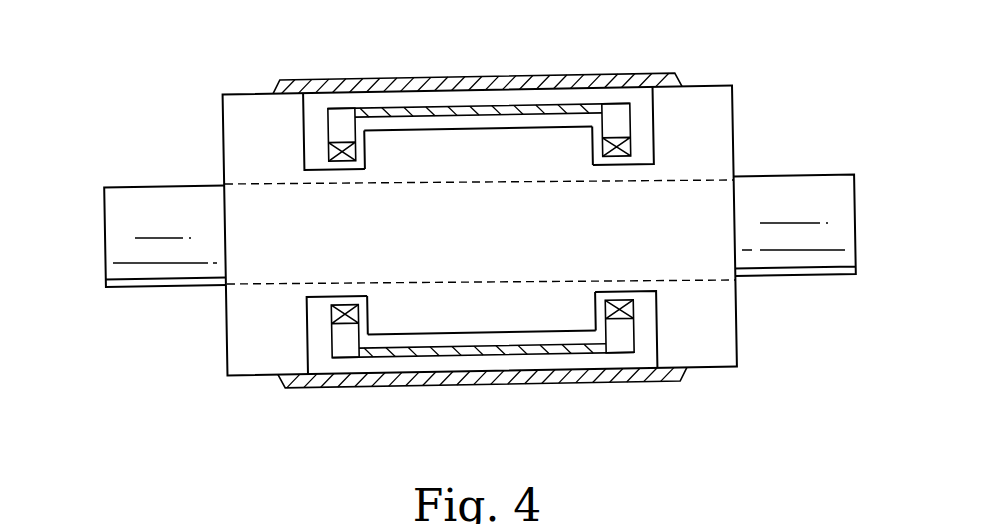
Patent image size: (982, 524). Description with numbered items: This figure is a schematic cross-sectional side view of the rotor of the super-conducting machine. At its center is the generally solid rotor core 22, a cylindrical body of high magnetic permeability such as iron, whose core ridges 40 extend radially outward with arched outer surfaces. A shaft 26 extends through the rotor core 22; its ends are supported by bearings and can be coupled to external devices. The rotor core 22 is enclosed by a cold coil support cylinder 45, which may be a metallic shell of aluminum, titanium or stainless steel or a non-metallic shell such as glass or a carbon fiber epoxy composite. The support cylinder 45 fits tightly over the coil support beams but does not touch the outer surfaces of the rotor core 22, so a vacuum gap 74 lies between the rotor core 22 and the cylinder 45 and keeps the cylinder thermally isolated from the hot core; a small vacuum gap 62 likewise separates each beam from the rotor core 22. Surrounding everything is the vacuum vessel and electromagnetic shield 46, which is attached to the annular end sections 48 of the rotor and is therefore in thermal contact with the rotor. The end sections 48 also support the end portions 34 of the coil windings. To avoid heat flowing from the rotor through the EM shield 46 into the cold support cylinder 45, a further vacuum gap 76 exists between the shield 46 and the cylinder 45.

The rotor core 22 is at (562, 307).
The shaft 26 is at (155, 258).
The end portions 34 is at (630, 146).
The core ridges 40 is at (477, 322).
The cold coil support cylinder 45 is at (428, 110).
The vacuum vessel and electromagnetic (EM) shield 46 is at (390, 79).
The annular end sections 48 is at (245, 345).
The vacuum gap 62 is at (600, 322).
The vacuum gap 74 is at (526, 125).
The vacuum gap 76 is at (480, 101).